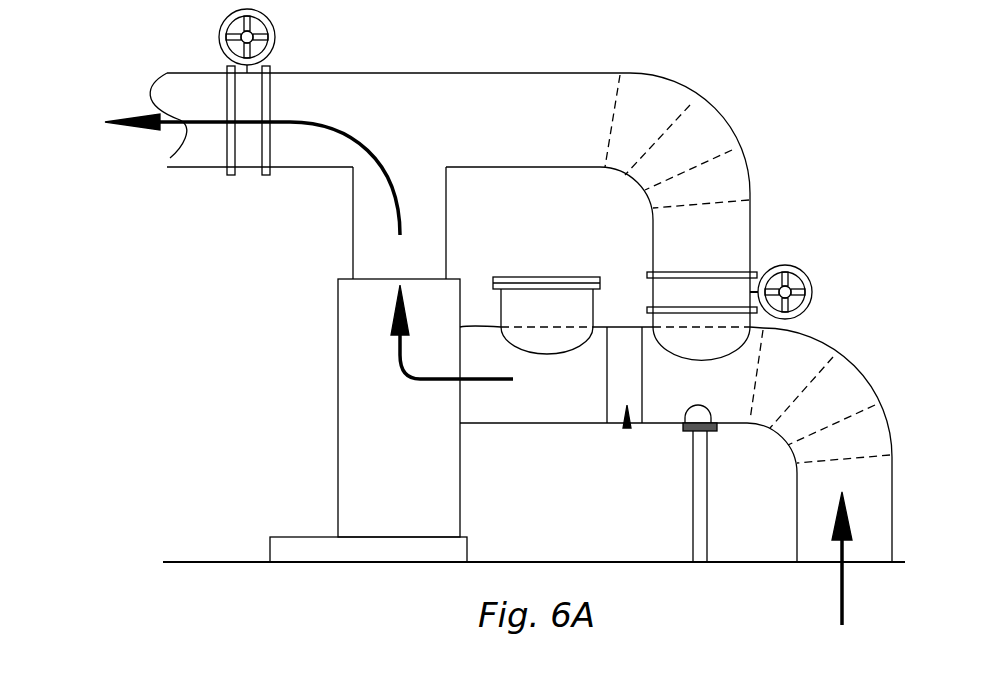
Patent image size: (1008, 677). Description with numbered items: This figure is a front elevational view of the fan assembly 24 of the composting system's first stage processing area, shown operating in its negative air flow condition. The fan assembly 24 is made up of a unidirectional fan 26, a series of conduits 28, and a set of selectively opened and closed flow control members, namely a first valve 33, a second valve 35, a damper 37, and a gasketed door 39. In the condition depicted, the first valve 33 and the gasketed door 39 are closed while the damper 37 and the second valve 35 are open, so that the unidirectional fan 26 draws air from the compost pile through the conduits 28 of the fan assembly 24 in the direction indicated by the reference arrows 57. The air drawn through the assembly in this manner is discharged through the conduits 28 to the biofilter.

The fan assembly 24 is at (768, 100).
The unidirectional fan 26 is at (298, 370).
The conduits 28 is at (190, 80).
The first valve 33 is at (770, 252).
The second valve 35 is at (215, 58).
The damper 37 is at (627, 428).
The gasketed door 39 is at (480, 278).
The reference arrows 57 is at (170, 158).